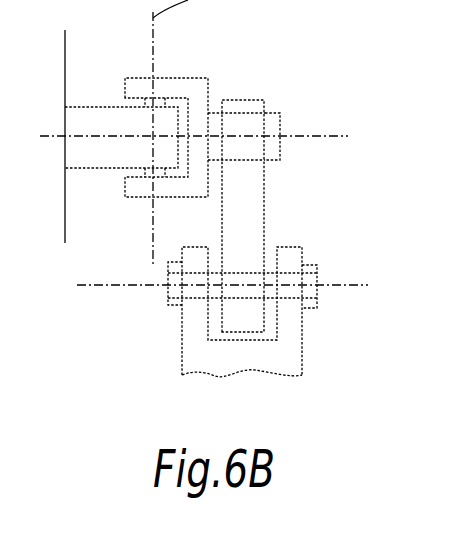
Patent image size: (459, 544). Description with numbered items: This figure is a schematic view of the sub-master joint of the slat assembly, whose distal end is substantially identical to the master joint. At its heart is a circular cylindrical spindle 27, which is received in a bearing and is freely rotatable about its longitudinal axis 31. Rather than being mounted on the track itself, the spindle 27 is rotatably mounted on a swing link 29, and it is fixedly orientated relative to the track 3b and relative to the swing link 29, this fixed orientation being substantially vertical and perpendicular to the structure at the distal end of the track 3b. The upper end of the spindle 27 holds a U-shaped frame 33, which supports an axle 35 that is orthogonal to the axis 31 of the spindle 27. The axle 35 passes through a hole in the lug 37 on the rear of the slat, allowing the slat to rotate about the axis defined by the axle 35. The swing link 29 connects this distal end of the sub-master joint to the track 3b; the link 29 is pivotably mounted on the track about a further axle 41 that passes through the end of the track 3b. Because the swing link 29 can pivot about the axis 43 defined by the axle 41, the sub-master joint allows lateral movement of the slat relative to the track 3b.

The spindle 27 is at (272, 130).
The swing link 29 is at (252, 210).
The longitudinal axis 31 is at (312, 137).
The U-shaped frame 33 is at (198, 90).
The axle 35 is at (145, 99).
The lug 37 is at (100, 150).
The axle 41 is at (198, 293).
The axis 43 is at (102, 285).
The track 3b is at (290, 355).